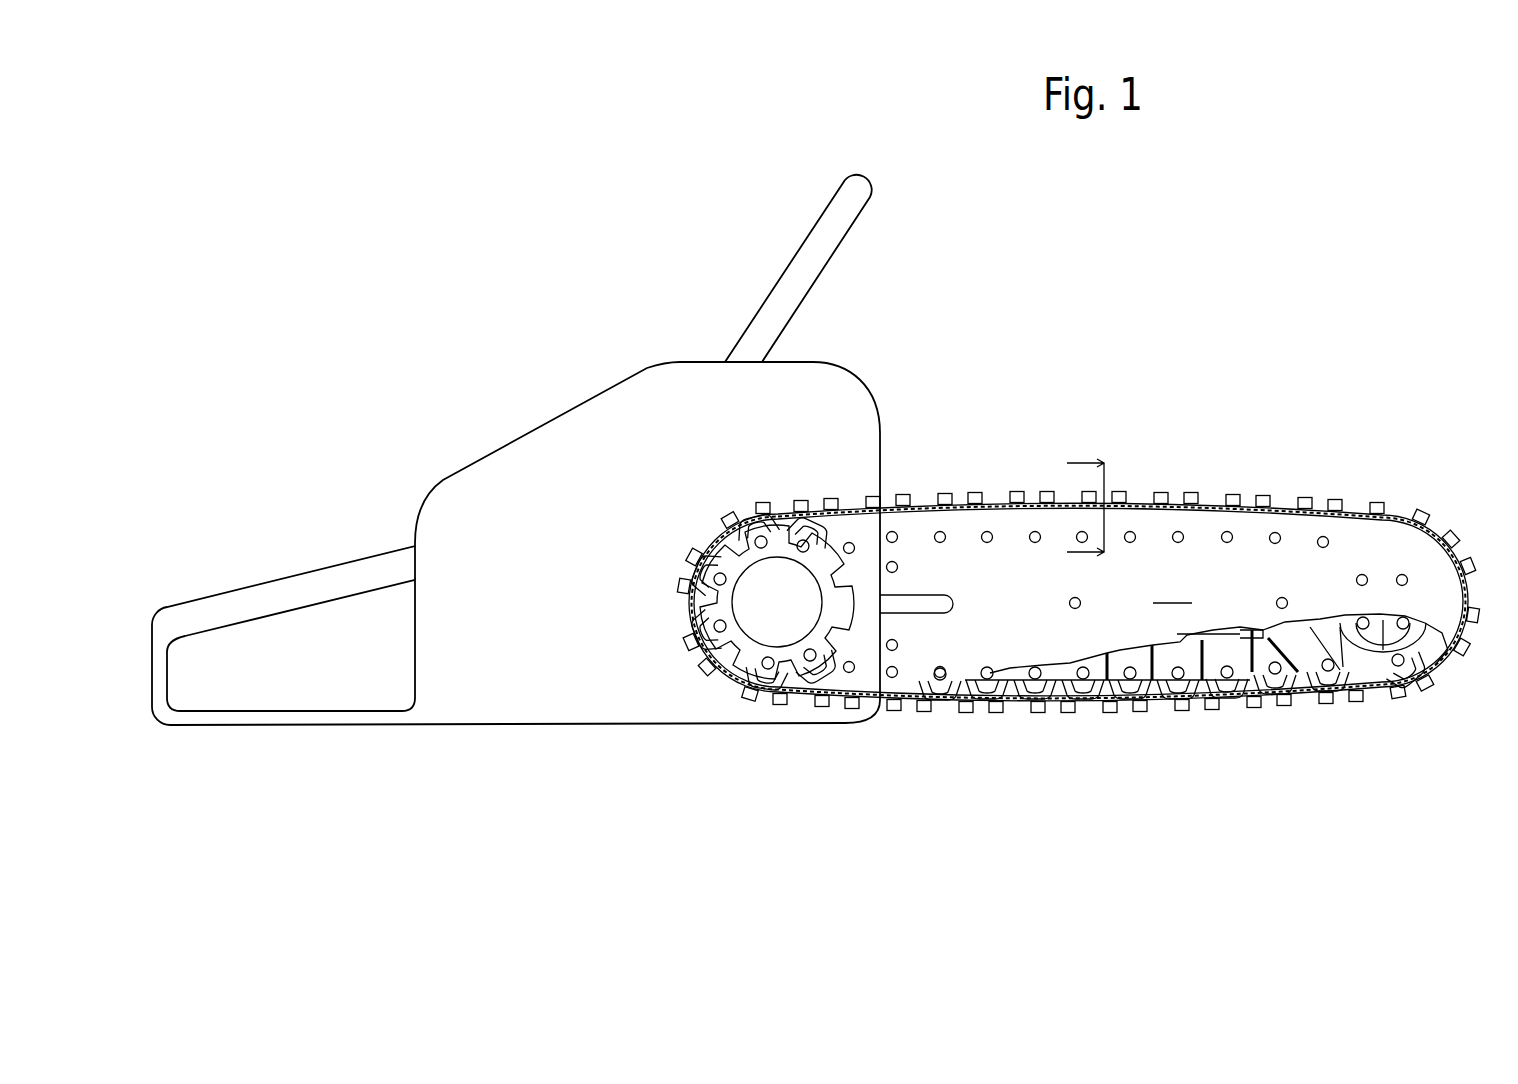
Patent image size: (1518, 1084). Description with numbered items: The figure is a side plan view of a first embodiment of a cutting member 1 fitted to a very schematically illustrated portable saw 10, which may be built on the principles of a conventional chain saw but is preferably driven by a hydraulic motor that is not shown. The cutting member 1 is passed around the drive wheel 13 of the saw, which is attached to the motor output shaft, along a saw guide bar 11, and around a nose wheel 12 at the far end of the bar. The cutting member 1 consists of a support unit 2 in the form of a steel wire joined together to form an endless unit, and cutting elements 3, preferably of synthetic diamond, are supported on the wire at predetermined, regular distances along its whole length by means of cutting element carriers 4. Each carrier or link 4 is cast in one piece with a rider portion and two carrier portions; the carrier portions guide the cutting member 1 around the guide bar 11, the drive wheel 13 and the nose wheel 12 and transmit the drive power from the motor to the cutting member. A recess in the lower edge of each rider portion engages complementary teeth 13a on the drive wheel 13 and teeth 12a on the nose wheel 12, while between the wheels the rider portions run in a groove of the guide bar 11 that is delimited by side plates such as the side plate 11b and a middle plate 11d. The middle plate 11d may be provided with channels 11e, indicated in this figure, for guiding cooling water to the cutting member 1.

The cutting member 1 is at (948, 708).
The support unit 2 is at (931, 500).
The cutting elements 3 is at (1038, 717).
The cutting element carriers 4 is at (1160, 490).
The saw 10 is at (572, 413).
The saw guide bar 11 is at (1296, 537).
The side plate 11b is at (1175, 591).
The middle plate 11d is at (1235, 657).
The channels 11e is at (1150, 690).
The nose wheel 12 is at (1390, 680).
The teeth 12a is at (1348, 655).
The drive wheel 13 is at (743, 647).
The teeth 13a is at (765, 672).